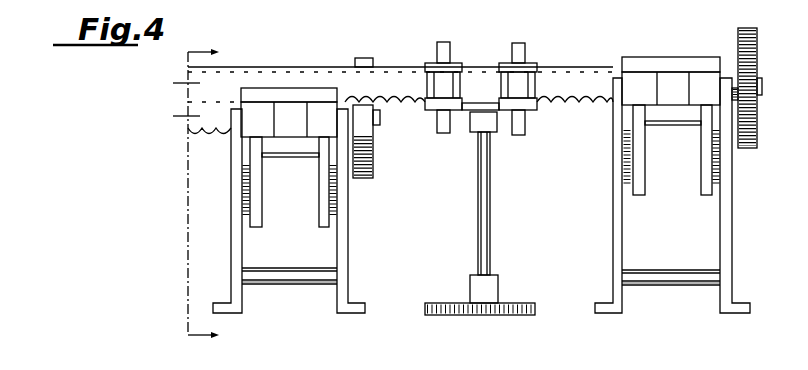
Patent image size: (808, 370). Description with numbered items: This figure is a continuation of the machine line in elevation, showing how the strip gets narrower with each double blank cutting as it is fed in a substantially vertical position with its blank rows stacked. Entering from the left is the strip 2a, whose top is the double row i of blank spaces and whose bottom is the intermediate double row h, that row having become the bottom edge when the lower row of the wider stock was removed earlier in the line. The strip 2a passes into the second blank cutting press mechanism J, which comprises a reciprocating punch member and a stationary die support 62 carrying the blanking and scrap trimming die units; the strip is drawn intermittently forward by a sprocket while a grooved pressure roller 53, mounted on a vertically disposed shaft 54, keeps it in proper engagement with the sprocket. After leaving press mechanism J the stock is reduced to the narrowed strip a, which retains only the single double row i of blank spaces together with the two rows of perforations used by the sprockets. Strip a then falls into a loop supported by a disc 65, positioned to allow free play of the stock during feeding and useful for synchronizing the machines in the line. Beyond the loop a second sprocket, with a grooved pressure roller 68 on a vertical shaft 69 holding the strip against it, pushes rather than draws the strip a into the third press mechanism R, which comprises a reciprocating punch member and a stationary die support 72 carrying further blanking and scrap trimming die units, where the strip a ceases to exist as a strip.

The strip 2a is at (237, 82).
The stationary die support 62 is at (286, 115).
The vertically disposed shaft 54 is at (445, 54).
The grooved pressure roller 53 is at (455, 65).
The grooved pressure roller 68 is at (505, 64).
The vertical shaft 69 is at (522, 43).
The disc 65 is at (466, 113).
The stationary die support 72 is at (670, 80).
The strip a is at (565, 80).
The top double blank row i is at (596, 46).
The intermediate double row h is at (192, 120).
The second blank cutting press mechanism J is at (289, 211).
The third press mechanism R is at (672, 195).